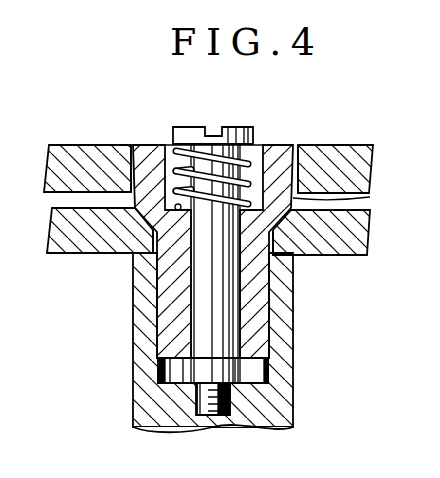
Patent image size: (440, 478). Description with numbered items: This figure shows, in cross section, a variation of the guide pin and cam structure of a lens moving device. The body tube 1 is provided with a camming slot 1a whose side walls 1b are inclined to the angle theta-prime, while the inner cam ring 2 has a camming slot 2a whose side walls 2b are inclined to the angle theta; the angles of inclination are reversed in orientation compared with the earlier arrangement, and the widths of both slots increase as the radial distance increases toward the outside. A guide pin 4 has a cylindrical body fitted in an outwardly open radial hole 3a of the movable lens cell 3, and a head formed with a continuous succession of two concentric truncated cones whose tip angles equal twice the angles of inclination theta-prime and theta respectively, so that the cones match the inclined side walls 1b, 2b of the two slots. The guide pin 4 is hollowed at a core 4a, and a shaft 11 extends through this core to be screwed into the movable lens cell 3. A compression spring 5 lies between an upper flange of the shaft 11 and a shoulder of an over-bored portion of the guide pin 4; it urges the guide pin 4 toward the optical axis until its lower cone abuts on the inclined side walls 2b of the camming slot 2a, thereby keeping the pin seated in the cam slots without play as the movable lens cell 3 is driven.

The body tube 1 is at (352, 157).
The camming slot 1a is at (133, 147).
The side walls 1b is at (294, 150).
The cam ring 2 is at (340, 228).
The camming slot 2a is at (280, 240).
The side walls 2b is at (368, 198).
The movable lens cell 3 is at (285, 311).
The radial hole 3a is at (266, 372).
The guide pin 4 is at (263, 336).
The core 4a is at (160, 346).
The compression spring 5 is at (257, 150).
The shaft 11 is at (189, 128).